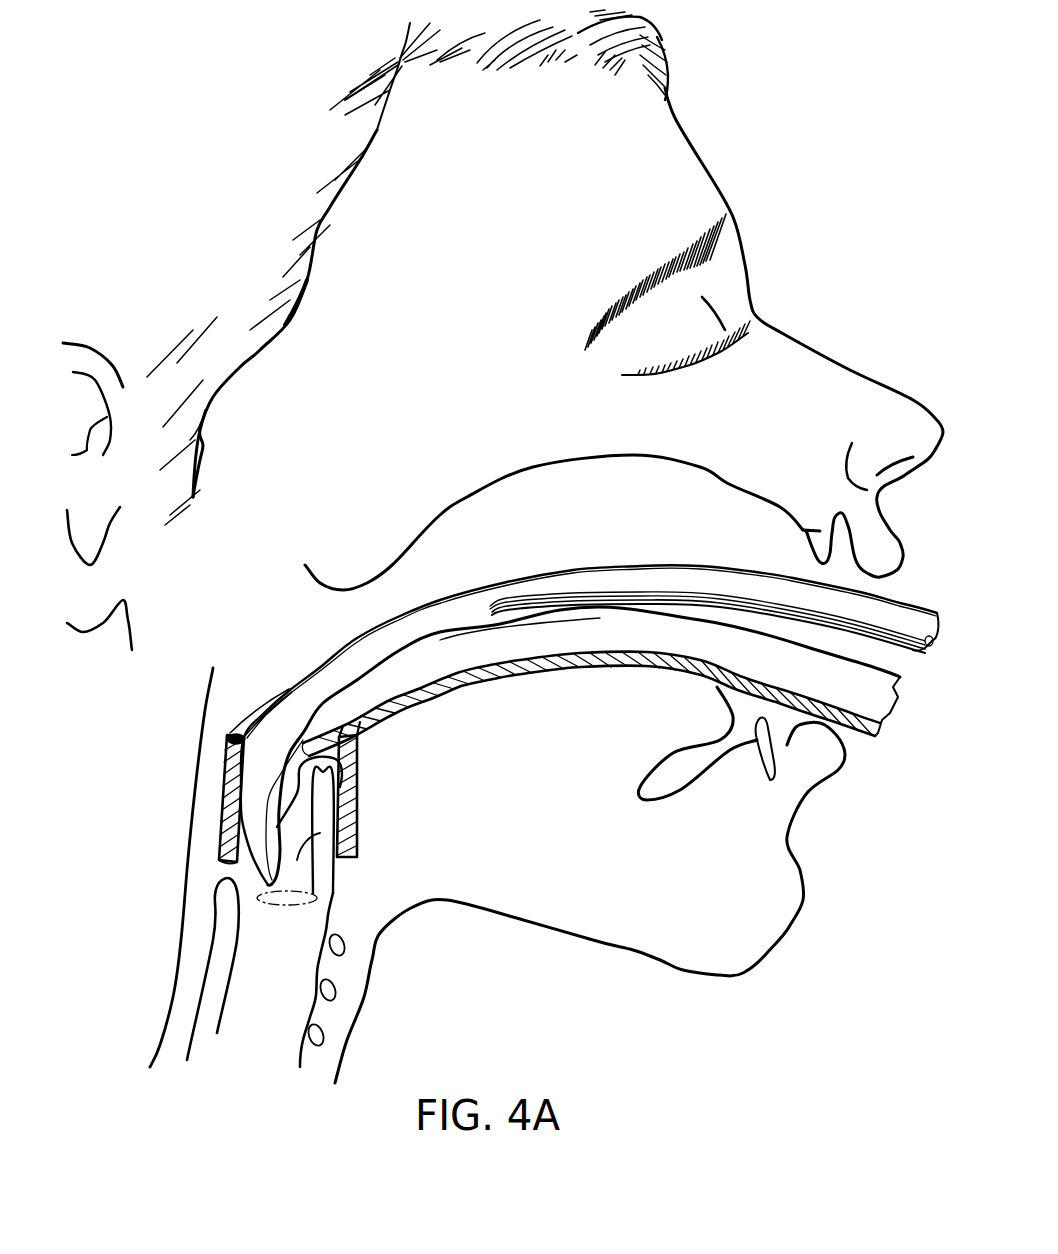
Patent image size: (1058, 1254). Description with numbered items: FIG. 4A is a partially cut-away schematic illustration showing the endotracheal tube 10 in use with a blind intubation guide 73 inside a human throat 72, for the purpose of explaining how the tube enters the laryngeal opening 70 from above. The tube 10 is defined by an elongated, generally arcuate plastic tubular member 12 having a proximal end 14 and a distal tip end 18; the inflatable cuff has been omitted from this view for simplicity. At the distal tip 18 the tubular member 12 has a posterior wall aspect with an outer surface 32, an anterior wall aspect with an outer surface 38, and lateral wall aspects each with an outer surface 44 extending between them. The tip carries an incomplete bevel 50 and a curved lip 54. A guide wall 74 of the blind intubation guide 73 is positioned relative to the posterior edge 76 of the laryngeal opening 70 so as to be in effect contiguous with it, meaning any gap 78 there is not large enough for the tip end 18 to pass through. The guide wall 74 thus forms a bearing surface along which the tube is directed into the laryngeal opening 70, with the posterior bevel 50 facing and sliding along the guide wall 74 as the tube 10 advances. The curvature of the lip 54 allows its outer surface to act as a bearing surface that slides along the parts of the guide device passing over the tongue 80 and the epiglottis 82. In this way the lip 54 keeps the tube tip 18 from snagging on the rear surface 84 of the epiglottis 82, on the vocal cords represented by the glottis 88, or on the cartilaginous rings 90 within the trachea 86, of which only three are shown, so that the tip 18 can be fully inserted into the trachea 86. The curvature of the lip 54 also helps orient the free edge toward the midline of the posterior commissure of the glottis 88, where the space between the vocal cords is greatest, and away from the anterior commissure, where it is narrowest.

The endotracheal tube 10 is at (655, 548).
The tubular member 12 is at (490, 583).
The proximal end 14 is at (916, 612).
The distal tip end 18 is at (250, 812).
The outer surface of posterior wall aspect 32 is at (338, 648).
The outer surface of anterior wall aspect 38 is at (440, 643).
The outer surface of lateral wall aspect 44 is at (318, 680).
The incomplete bevel 50 is at (237, 838).
The lip 54 is at (330, 883).
The laryngeal opening 70 is at (345, 823).
The throat 72 is at (507, 526).
The blind intubation guide 73 is at (503, 690).
The guide wall 74 is at (230, 740).
The posterior edge of laryngeal opening 76 is at (215, 895).
The gap 78 is at (230, 870).
The tongue 80 is at (620, 718).
The epiglottis 82 is at (345, 773).
The rear surface of epiglottis 84 is at (350, 742).
The trachea 86 is at (286, 999).
The glottis 88 is at (335, 925).
The cartilaginous rings 90 is at (330, 988).